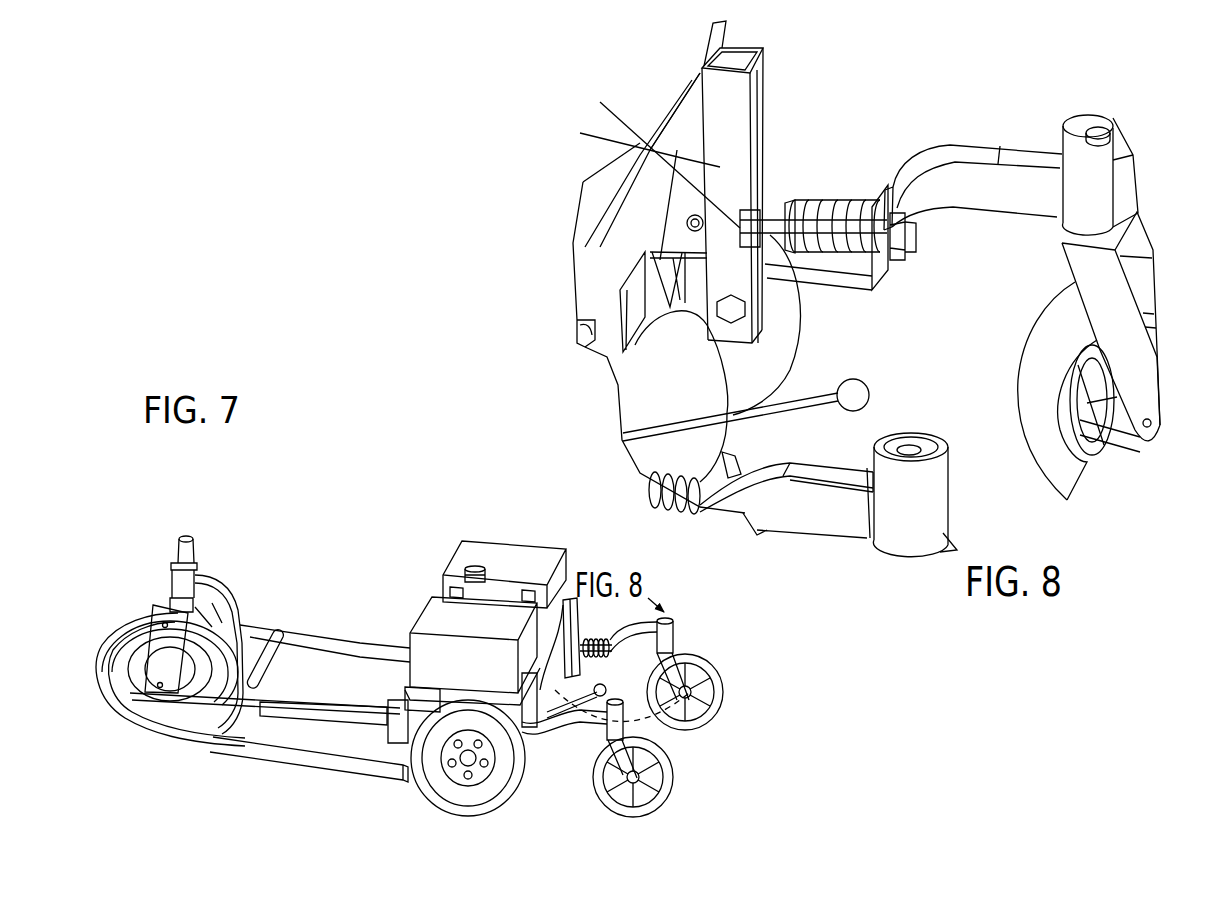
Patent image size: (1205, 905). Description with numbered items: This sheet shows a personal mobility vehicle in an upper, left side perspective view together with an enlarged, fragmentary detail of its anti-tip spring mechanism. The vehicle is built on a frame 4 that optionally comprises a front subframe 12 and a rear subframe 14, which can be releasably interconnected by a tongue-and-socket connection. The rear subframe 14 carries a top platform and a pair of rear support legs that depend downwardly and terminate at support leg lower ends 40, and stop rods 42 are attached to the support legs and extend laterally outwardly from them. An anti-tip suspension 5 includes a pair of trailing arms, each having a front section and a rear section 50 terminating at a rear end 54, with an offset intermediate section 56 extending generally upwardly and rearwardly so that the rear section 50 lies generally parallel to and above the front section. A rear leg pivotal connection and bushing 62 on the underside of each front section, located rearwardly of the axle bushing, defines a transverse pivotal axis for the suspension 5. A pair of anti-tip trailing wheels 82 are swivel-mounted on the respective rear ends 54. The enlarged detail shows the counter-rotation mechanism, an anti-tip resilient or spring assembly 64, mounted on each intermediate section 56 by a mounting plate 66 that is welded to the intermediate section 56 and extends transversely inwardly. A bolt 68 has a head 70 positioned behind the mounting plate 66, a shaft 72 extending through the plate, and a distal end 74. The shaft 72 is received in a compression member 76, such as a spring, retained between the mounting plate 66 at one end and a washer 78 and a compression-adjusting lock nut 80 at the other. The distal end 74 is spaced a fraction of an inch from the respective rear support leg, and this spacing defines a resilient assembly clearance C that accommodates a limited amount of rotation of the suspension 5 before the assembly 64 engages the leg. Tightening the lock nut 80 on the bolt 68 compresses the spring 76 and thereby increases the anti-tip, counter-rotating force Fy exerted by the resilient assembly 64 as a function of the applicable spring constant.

In FIG. 7, the frame 4 is at (313, 560).
In FIG. 7, the front subframe 12 is at (218, 760).
In FIG. 7, the rear subframe 14 is at (397, 686).
In FIG. 7, the anti-tip suspension 5 is at (681, 617).
In FIG. 8, the support leg lower ends 40 is at (767, 337).
In FIG. 8, the stop rods 42 is at (691, 235).
In FIG. 8, the rear section 50 is at (857, 516).
In FIG. 8, the rear end 54 is at (1057, 202).
In FIG. 8, the offset intermediate section 56 is at (767, 534).
In FIG. 8, the rear leg pivotal connection and bushing 62 is at (731, 331).
In FIG. 8, the anti-tip resilient or spring assembly 64 is at (870, 287).
In FIG. 8, the mounting plate 66 is at (889, 280).
In FIG. 8, the bolt 68 is at (913, 263).
In FIG. 8, the head 70 is at (917, 242).
In FIG. 8, the shaft 72 is at (757, 205).
In FIG. 8, the distal end 74 is at (753, 233).
In FIG. 8, the compression member 76 is at (834, 197).
In FIG. 8, the washer 78 is at (795, 190).
In FIG. 8, the compression-adjusting lock nut 80 is at (780, 202).
In FIG. 8, the anti-tip trailing wheels 82 is at (1017, 413).
In FIG. 8, the resilient assembly clearance C is at (755, 230).
In FIG. 8, the anti-tip counter-rotating force Fy is at (855, 228).